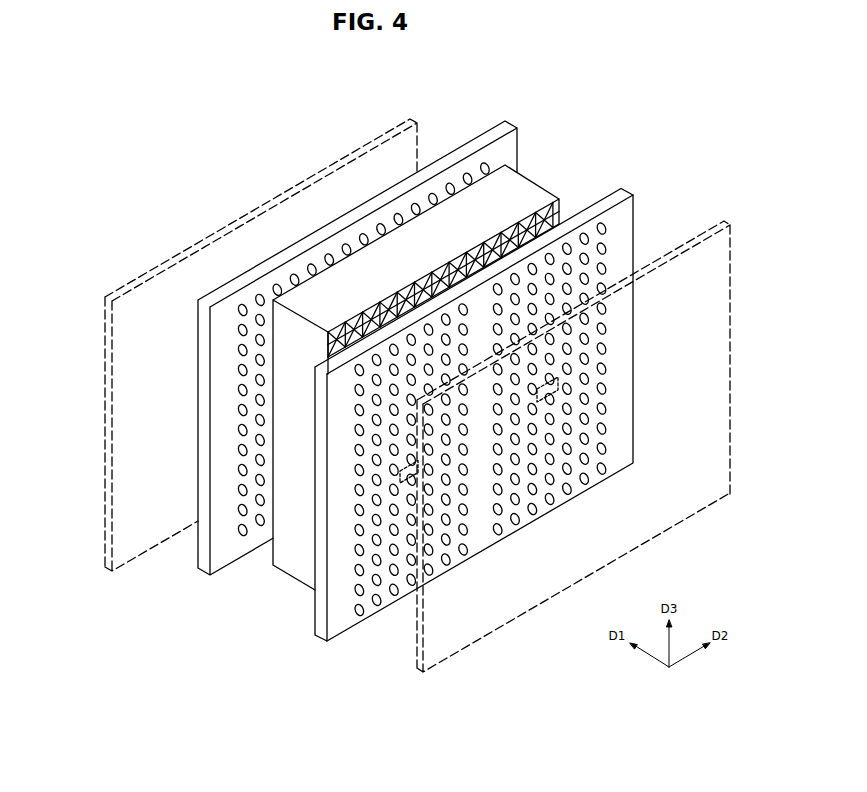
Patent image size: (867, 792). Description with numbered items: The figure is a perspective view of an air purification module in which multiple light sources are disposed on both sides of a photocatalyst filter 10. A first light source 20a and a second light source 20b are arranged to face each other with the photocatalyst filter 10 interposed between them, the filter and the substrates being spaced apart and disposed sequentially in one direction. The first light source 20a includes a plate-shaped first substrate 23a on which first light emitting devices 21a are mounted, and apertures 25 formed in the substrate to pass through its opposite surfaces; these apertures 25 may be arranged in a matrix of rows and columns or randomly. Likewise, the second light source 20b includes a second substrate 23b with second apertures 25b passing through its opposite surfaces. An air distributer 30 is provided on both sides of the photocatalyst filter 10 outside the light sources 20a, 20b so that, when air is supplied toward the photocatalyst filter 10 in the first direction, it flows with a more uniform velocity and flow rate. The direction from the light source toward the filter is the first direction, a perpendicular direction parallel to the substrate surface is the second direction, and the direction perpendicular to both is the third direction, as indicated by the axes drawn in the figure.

The photocatalyst filter 10 is at (527, 200).
The first light source 20a is at (487, 445).
The second light source 20b is at (332, 377).
The first light emitting devices 21a is at (559, 384).
The first substrate 23a is at (623, 320).
The second substrate 23b is at (225, 365).
The apertures 25 is at (603, 410).
The second apertures 25b is at (243, 412).
The air distributer 30 is at (139, 279).